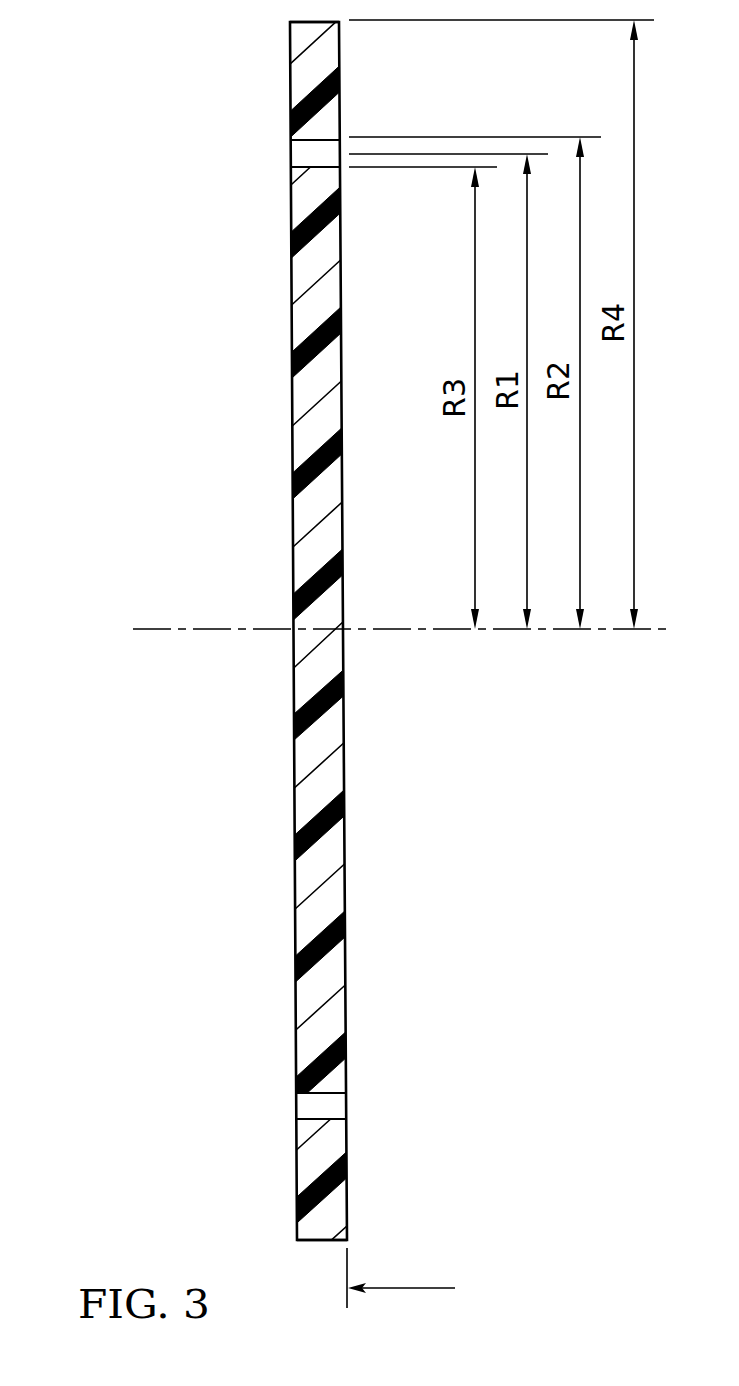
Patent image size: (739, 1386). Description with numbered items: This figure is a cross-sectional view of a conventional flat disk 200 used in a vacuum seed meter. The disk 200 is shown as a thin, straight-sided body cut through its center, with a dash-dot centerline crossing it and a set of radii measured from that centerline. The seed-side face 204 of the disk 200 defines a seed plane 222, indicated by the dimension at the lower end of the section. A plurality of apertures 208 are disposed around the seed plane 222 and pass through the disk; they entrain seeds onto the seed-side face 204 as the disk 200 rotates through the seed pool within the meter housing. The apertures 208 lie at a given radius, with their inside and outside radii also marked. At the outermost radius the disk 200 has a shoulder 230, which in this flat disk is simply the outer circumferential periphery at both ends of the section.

The flat disk 200 is at (284, 322).
The seed-side face 204 is at (345, 753).
The apertures 208 is at (295, 154).
The seed plane 222 is at (433, 1278).
The shoulder 230 is at (309, 21).